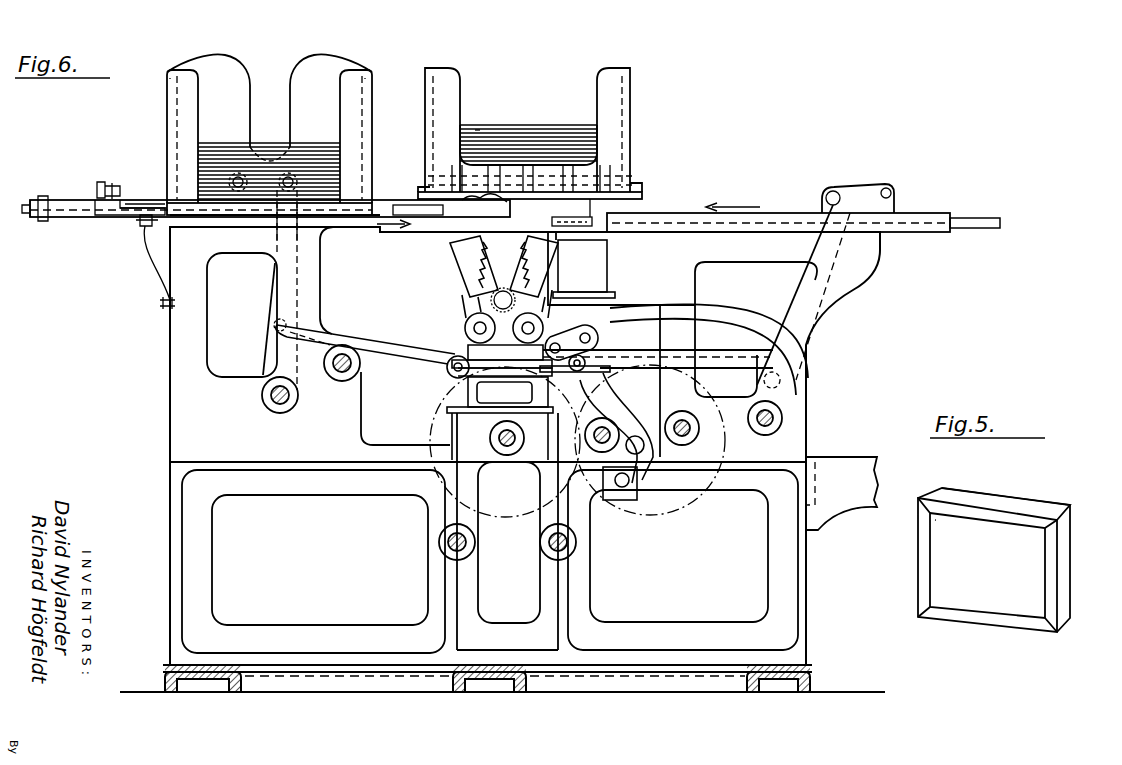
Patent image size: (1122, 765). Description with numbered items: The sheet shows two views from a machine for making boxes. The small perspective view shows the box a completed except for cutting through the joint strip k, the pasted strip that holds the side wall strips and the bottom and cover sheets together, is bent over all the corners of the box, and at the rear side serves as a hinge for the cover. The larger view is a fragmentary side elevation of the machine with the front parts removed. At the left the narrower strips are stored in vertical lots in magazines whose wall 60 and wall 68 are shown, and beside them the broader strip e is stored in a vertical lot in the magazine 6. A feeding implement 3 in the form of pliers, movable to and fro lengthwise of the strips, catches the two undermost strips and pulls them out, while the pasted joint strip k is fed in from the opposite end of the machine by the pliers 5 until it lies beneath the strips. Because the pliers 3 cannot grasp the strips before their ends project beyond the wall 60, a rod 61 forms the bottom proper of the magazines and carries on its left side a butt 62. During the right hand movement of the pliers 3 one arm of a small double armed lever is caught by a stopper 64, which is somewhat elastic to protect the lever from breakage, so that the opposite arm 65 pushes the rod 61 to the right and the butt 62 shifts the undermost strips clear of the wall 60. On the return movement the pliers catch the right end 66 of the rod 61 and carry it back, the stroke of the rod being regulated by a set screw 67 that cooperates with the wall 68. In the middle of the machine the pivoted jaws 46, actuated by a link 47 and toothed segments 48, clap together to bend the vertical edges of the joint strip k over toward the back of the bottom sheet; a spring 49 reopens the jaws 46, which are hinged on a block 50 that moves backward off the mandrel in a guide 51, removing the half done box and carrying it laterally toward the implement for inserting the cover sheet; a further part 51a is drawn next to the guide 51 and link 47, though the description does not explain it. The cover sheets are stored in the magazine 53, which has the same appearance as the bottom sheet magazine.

In FIG. 6, the wall of the magazines 68 is at (168, 119).
In FIG. 6, the wall of the magazines 60 is at (367, 130).
In FIG. 6, the magazine 6 is at (593, 113).
In FIG. 6, the strip e is at (475, 127).
In FIG. 6, the right end of the rod 66 is at (388, 207).
In FIG. 6, the feeding implement 3 is at (470, 198).
In FIG. 6, the pliers 5 is at (593, 218).
In FIG. 6, the arm 65 is at (50, 218).
In FIG. 6, the set screw 67 is at (109, 180).
In FIG. 6, the butt 62 is at (100, 214).
In FIG. 6, the rod 61 is at (150, 202).
In FIG. 6, the stopper 64 is at (140, 228).
In FIG. 6, the pivoted jaws 46 is at (535, 256).
In FIG. 6, the spring 49 is at (503, 310).
In FIG. 6, the toothed segments 48 is at (478, 320).
In FIG. 6, the block 50 is at (483, 343).
In FIG. 6, the guide 51 is at (455, 358).
In FIG. 6, the link 47 is at (573, 343).
In FIG. 6, the lever pivot 51a is at (593, 367).
In FIG. 6, the magazine 53 is at (598, 266).
In FIG. 5, the box a is at (1015, 498).
In FIG. 5, the joint strip k is at (1068, 575).